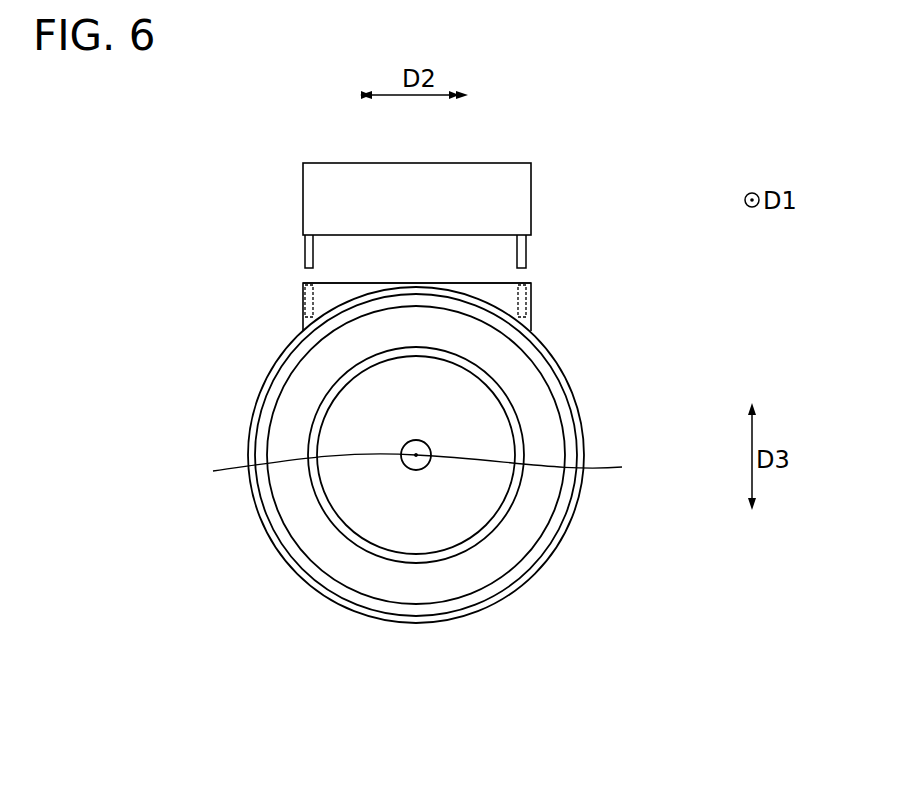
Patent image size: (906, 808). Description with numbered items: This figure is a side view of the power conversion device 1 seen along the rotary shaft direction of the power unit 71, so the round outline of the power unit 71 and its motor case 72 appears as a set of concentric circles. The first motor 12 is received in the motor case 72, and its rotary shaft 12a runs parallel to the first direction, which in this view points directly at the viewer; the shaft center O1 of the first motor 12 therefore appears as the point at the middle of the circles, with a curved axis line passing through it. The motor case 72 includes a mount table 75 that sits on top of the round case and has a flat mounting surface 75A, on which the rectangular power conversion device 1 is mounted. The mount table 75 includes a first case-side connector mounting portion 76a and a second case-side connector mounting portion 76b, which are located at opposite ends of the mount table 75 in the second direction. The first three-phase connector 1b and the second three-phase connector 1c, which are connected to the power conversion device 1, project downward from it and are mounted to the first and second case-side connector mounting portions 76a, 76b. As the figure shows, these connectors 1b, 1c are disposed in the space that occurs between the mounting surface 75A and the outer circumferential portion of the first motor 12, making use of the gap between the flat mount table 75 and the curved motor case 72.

The power conversion device 1 is at (532, 163).
The first three-phase connector 1b is at (305, 250).
The second three-phase connector 1c is at (526, 250).
The first motor 12 is at (568, 438).
The rotary shaft 12a is at (471, 461).
The power unit 71 is at (481, 614).
The motor case 72 is at (565, 376).
The mount table 75 is at (532, 314).
The mounting surface 75A is at (485, 266).
The first case-side connector mounting portion 76a is at (305, 298).
The second case-side connector mounting portion 76b is at (531, 302).
The shaft center O1 is at (270, 468).